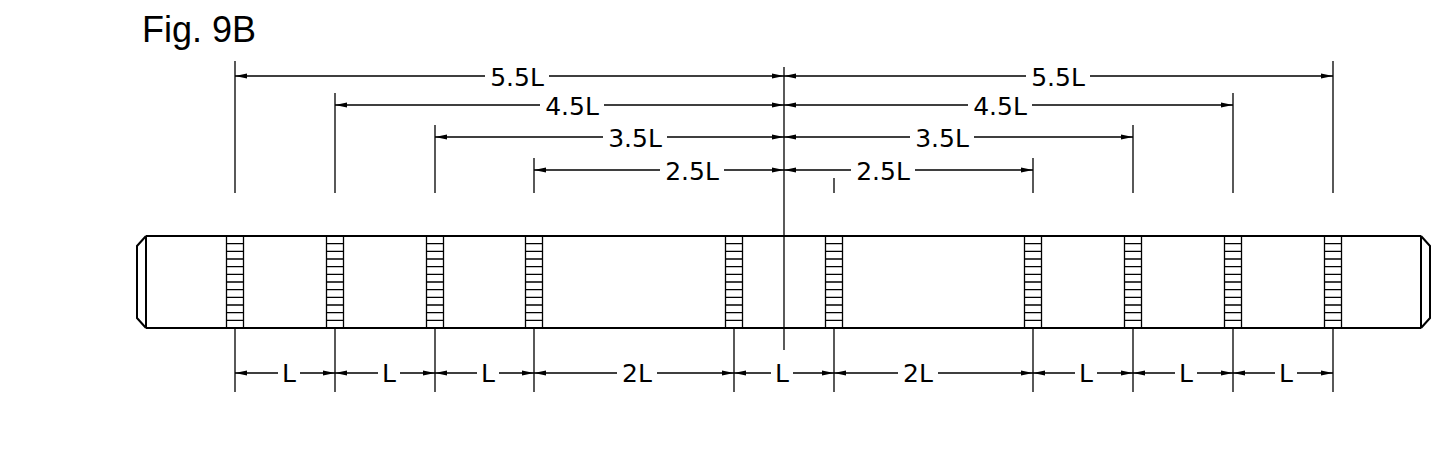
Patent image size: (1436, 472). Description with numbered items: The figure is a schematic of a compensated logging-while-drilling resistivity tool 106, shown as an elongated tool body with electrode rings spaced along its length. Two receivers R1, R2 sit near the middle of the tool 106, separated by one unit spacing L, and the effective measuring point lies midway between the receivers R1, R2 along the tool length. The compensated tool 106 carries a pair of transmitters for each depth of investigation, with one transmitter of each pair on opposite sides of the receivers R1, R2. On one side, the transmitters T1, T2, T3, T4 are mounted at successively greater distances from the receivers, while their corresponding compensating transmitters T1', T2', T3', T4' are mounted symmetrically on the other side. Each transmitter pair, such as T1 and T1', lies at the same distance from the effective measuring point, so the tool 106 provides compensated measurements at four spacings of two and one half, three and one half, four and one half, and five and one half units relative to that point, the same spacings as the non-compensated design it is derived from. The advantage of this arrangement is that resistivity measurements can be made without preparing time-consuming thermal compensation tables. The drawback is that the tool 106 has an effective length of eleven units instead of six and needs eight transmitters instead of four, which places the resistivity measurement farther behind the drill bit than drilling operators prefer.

The compensated tool 106 is at (626, 402).
The transmitter T4 is at (234, 262).
The transmitter T3 is at (334, 262).
The transmitter T2 is at (434, 262).
The transmitter T1 is at (533, 262).
The receiver R1 is at (734, 236).
The receiver R2 is at (834, 236).
The compensating transmitter T1' is at (1035, 262).
The compensating transmitter T2' is at (1135, 262).
The compensating transmitter T3' is at (1235, 262).
The compensating transmitter T4' is at (1335, 262).